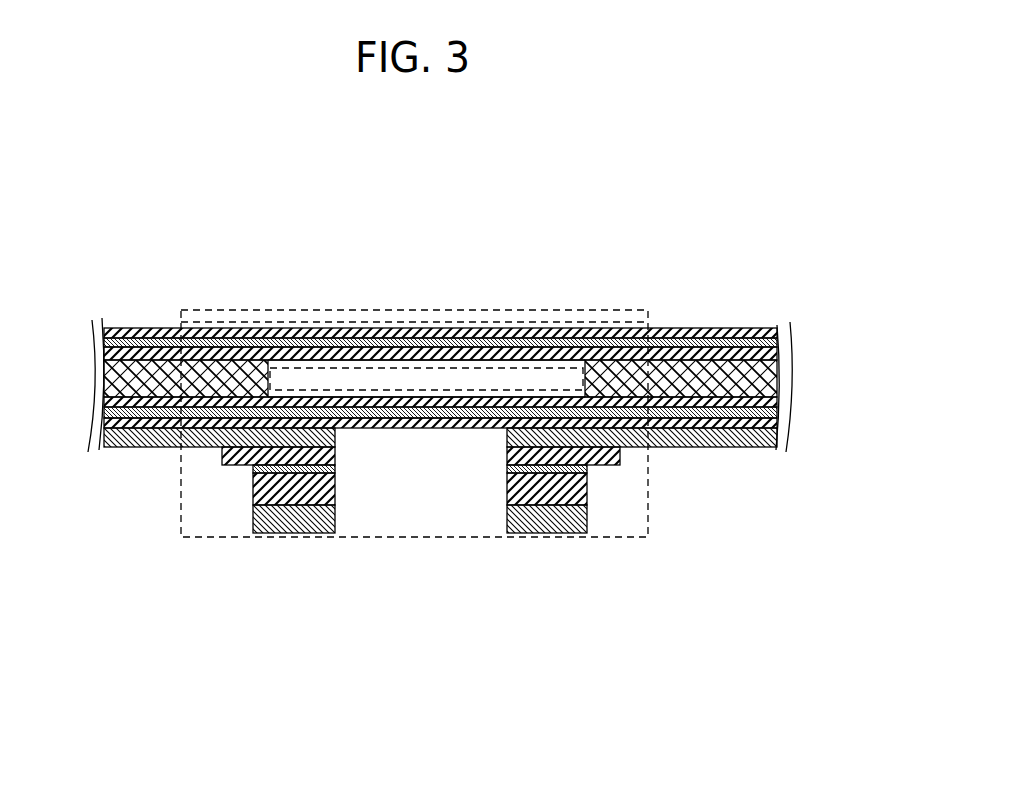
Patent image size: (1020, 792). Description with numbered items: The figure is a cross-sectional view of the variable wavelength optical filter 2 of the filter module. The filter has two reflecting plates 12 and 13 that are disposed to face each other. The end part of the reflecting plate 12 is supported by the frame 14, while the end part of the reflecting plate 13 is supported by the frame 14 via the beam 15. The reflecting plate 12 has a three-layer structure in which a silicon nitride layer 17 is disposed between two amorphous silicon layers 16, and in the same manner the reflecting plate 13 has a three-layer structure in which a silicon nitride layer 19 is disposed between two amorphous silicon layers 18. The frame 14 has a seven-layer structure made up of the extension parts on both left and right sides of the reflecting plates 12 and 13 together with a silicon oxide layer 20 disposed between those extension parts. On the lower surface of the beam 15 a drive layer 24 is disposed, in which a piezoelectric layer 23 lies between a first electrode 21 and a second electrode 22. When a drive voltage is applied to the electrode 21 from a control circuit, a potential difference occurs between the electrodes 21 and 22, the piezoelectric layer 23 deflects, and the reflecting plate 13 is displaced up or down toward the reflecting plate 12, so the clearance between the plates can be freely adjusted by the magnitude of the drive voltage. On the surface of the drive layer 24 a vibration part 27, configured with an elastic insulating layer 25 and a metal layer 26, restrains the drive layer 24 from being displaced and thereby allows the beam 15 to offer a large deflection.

The variable wavelength optical filter 2 is at (420, 537).
The reflecting plate 12 is at (440, 287).
The reflecting plate 13 is at (437, 436).
The frame 14 is at (232, 322).
The beam 15 is at (322, 390).
The amorphous silicon layer 16 is at (493, 333).
The silicon nitride layer 17 is at (527, 343).
The amorphous silicon layer 18 is at (366, 421).
The silicon nitride layer 19 is at (387, 413).
The silicon oxide layer 20 is at (240, 376).
The electrode 21 is at (256, 483).
The electrode 22 is at (222, 447).
The piezoelectric layer 23 is at (252, 468).
The drive layer 24 is at (328, 509).
The elastic insulating layer 25 is at (257, 505).
The metal layer 26 is at (315, 510).
The vibration part 27 is at (379, 584).